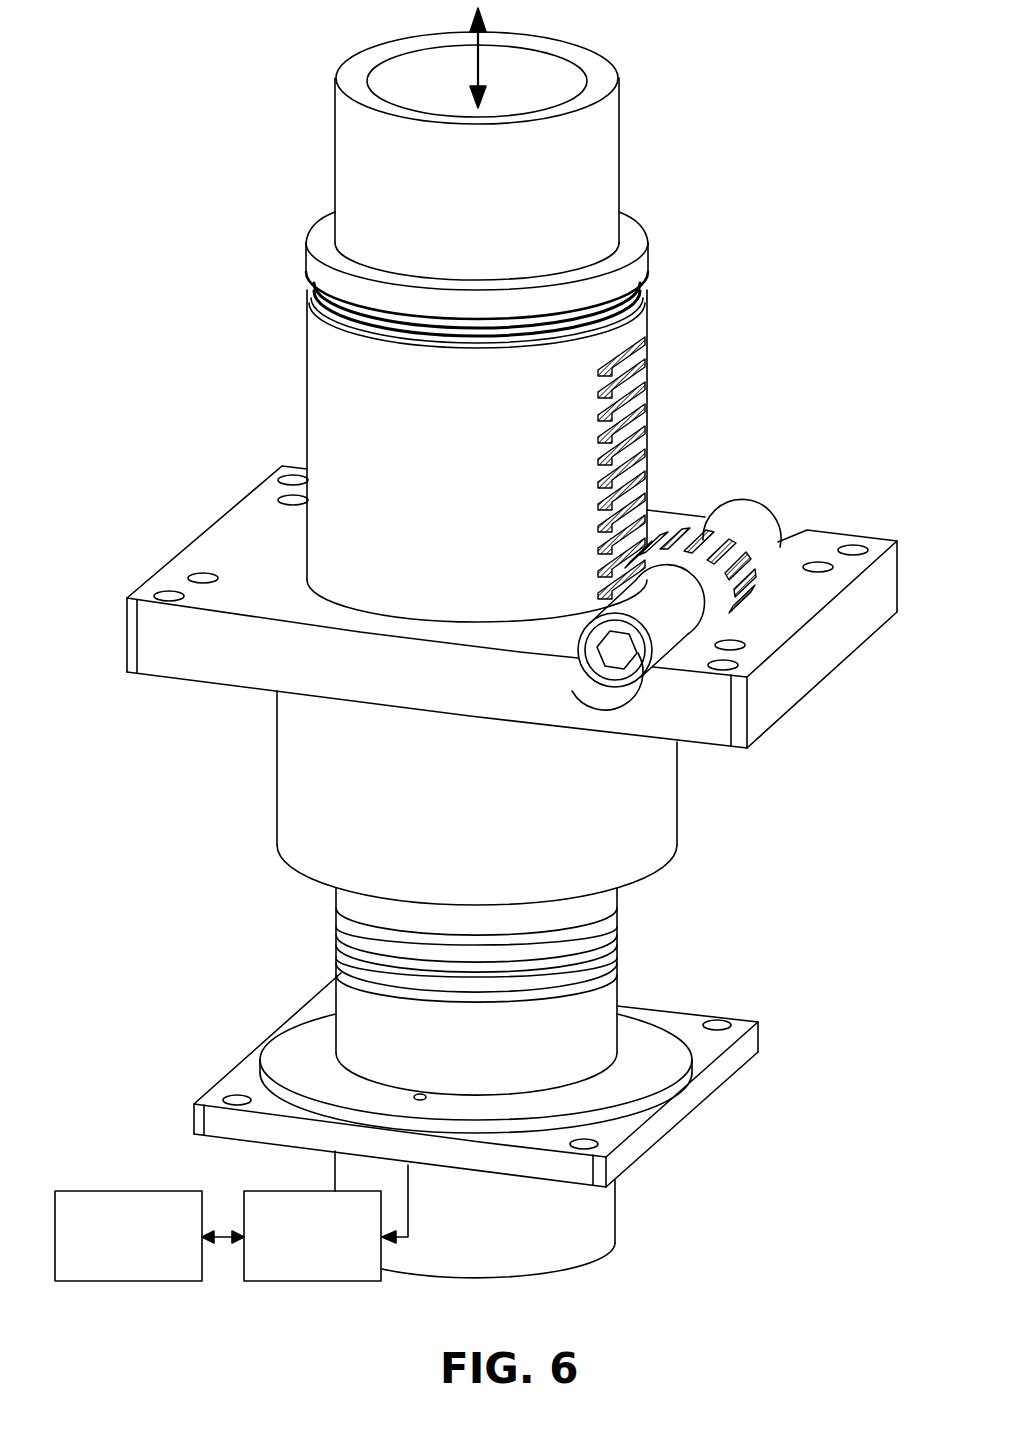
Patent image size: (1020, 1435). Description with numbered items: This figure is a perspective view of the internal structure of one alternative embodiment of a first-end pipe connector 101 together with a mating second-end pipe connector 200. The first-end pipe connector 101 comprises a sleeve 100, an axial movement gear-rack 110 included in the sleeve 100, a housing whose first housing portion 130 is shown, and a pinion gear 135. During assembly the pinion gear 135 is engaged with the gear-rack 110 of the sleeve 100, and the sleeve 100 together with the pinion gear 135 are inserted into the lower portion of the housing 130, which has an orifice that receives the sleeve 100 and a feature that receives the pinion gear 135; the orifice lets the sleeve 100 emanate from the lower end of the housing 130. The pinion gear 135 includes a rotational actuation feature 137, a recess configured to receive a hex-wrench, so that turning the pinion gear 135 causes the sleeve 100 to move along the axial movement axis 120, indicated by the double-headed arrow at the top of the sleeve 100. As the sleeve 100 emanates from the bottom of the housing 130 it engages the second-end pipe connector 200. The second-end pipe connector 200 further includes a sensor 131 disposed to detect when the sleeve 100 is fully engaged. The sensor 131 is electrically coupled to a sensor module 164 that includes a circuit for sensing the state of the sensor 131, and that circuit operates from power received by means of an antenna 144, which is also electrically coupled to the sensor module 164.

The sleeve 100 is at (648, 296).
The first-end pipe connector 101 is at (512, 643).
The axial movement gear-rack 110 is at (640, 418).
The axial movement axis 120 is at (483, 74).
The first housing portion 130 is at (773, 726).
The sensor 131 is at (426, 1095).
The pinion gear 135 is at (687, 523).
The rotational actuation feature 137 is at (598, 688).
The antenna 144 is at (107, 1190).
The sensor module 164 is at (255, 1283).
The second-end pipe connector 200 is at (760, 1023).